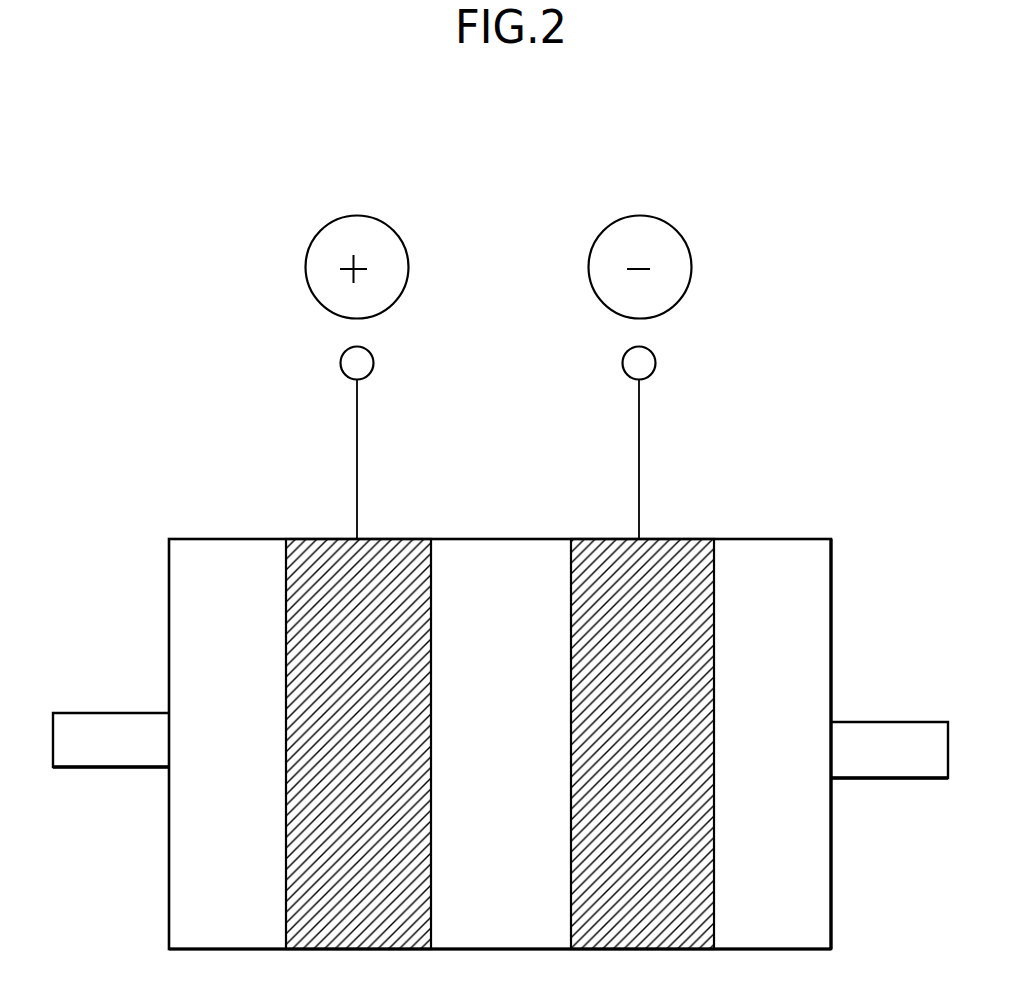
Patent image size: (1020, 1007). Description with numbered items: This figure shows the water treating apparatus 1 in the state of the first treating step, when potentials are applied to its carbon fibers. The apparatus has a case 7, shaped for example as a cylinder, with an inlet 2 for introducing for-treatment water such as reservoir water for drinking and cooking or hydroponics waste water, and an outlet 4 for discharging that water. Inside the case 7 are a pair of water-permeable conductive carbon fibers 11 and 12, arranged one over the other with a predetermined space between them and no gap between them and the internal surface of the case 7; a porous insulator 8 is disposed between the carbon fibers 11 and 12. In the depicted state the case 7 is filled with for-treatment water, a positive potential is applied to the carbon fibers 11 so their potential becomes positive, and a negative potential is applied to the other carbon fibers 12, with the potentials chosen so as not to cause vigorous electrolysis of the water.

The water treating apparatus 1 is at (481, 378).
The inlet 2 is at (888, 720).
The outlet 4 is at (93, 712).
The case 7 is at (207, 538).
The porous insulator 8 is at (495, 557).
The carbon fibers 11 is at (285, 575).
The carbon fibers 12 is at (690, 552).